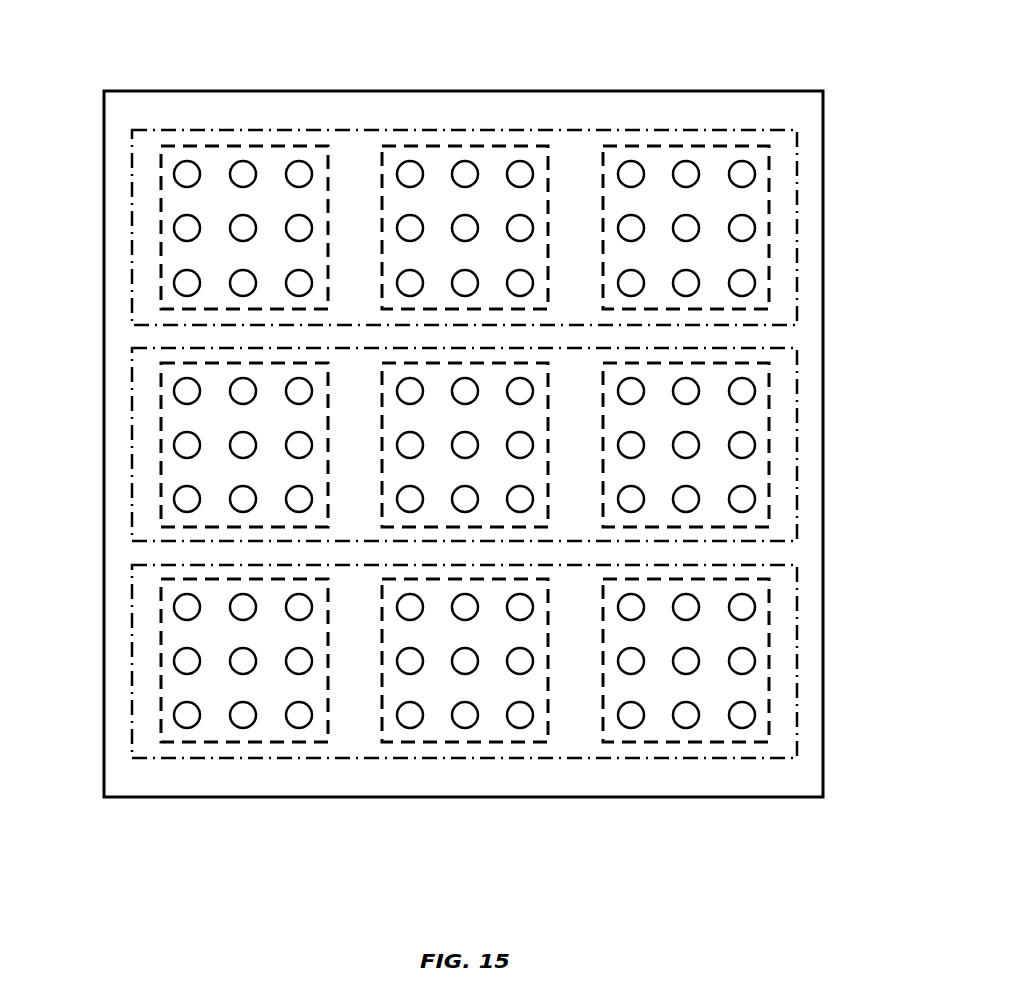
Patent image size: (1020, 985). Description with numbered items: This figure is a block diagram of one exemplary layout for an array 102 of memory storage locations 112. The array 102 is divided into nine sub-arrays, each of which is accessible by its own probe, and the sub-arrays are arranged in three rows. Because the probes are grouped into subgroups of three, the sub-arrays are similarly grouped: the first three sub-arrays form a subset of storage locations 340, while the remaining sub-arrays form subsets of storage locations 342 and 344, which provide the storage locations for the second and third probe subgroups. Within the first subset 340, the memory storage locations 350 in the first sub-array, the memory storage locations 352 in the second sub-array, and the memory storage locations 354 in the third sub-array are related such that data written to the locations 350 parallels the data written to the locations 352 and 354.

The array 102 is at (188, 91).
The subset of storage locations 340 is at (132, 200).
The subset of storage locations 342 is at (132, 402).
The subset of storage locations 344 is at (132, 618).
The memory storage locations 350 is at (299, 270).
The memory storage locations 352 is at (520, 270).
The memory storage locations 354 is at (742, 270).
The memory storage locations 112 is at (755, 715).